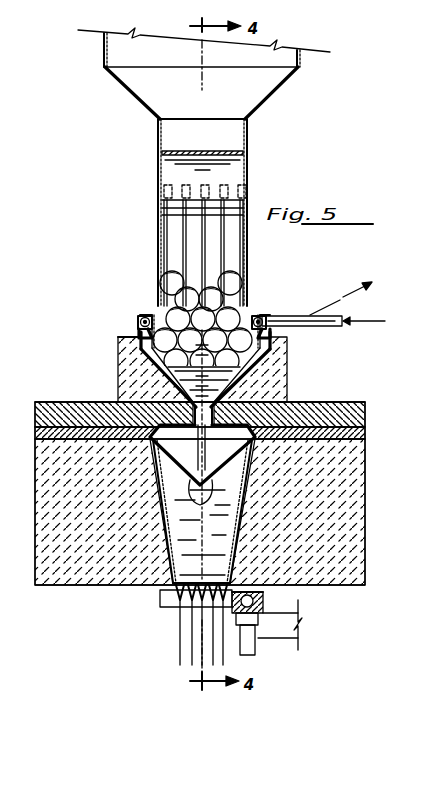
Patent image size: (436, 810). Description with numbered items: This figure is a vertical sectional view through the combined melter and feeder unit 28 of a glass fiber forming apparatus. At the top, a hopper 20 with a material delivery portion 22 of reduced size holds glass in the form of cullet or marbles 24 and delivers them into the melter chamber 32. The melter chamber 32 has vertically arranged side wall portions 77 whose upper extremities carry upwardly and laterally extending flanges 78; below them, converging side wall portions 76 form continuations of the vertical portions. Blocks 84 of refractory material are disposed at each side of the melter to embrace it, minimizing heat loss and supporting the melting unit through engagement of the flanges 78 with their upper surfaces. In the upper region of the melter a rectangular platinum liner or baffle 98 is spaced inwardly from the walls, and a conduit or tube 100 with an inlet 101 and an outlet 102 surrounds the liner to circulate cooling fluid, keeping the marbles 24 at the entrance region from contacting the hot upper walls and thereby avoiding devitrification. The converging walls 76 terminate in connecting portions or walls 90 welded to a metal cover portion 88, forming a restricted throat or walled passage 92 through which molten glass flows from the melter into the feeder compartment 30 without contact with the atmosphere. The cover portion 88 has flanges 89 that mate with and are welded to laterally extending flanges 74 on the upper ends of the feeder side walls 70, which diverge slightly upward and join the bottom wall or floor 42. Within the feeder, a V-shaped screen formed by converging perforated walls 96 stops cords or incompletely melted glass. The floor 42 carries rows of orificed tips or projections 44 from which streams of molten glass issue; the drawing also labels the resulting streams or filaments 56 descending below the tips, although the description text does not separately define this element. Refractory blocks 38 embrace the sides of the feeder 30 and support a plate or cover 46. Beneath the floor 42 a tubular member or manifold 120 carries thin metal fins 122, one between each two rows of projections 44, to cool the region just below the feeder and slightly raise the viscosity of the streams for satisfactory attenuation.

The hopper 20 is at (302, 60).
The material delivery portion 22 is at (248, 167).
The cullet or marbles 24 is at (222, 300).
The combined melter and feeder unit 28 is at (345, 370).
The feeder compartment or chamber 30 is at (95, 585).
The melter chamber 32 is at (262, 350).
The blocks or members 38 is at (367, 540).
The bottom wall or floor 42 is at (270, 585).
The tips or projections 44 is at (160, 598).
The plate or cover 46 is at (352, 400).
The filaments 56 is at (183, 632).
The side walls 70 is at (160, 494).
The laterally extending flanges 74 is at (150, 438).
The side wall portions 76 is at (150, 385).
The vertically arranged side wall portions 77 is at (124, 340).
The upwardly and laterally extending flanges 78 is at (133, 334).
The blocks or members 84 is at (118, 356).
The metal cover portion 88 is at (257, 425).
The flanges 89 is at (45, 427).
The connecting portions or walls 90 is at (150, 432).
The restricted throat or walled passage 92 is at (150, 401).
The converging perforated walls 96 is at (244, 493).
The liner or baffle 98 is at (148, 318).
The conduit or tube 100 is at (142, 319).
The inlet 101 is at (343, 313).
The outlet 102 is at (330, 300).
The tubular member or manifold 120 is at (265, 605).
The thin metal fins 122 is at (165, 608).